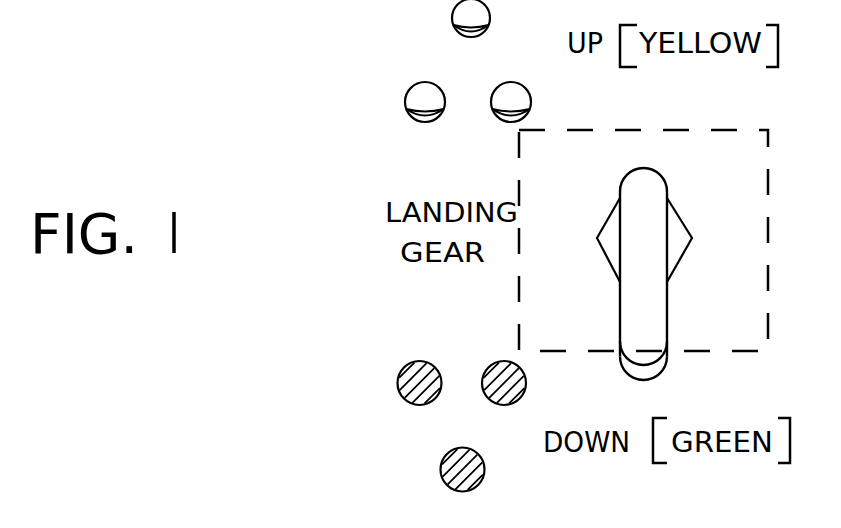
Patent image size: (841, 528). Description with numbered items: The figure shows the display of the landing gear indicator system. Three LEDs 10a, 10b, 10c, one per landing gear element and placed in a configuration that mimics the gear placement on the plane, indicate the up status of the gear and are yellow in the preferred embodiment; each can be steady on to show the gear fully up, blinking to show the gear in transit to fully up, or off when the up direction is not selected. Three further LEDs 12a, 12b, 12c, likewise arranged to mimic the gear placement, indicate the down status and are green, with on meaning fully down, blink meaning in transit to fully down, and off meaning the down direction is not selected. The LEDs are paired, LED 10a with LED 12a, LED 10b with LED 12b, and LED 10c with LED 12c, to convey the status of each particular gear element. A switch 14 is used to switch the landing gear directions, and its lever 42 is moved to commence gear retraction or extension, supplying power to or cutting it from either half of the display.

The LED 10a is at (452, 16).
The LED 10b is at (406, 101).
The LED 10c is at (531, 100).
The LED 12a is at (440, 468).
The LED 12b is at (402, 368).
The LED 12c is at (526, 383).
The switch 14 is at (768, 198).
The lever 42 is at (667, 303).